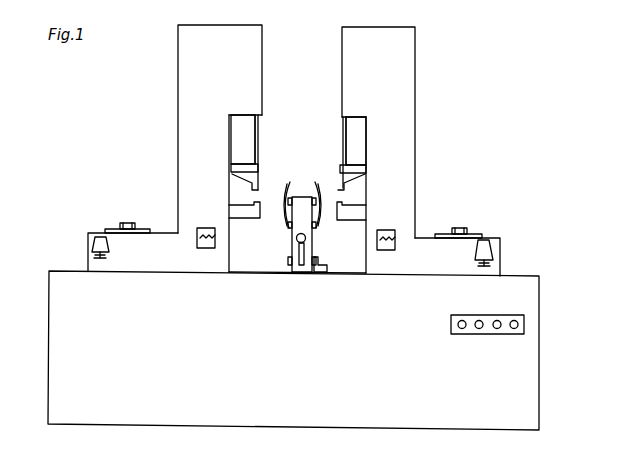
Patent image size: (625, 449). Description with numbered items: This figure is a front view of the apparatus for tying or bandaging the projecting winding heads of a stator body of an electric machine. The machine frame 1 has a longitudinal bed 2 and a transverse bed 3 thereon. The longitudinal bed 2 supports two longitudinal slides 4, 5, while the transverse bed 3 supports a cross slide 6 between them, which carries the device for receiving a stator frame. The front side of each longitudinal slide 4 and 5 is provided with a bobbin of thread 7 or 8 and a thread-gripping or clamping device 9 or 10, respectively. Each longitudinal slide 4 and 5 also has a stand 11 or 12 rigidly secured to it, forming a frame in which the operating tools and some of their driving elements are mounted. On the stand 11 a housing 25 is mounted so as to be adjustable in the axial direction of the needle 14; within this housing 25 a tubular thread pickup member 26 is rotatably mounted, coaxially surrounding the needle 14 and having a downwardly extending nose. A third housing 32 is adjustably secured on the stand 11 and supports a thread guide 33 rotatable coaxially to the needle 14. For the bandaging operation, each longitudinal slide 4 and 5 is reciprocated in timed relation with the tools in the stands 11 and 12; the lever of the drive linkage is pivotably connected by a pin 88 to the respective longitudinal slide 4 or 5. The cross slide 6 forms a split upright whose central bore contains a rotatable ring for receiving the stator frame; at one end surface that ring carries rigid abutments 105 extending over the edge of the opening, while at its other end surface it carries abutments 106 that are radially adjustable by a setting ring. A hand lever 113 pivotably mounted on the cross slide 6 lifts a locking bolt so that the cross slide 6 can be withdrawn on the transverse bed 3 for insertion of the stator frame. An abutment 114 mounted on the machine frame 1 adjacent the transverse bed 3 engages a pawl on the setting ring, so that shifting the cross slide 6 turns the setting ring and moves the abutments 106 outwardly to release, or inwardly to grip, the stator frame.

The machine frame 1 is at (61, 372).
The longitudinal bed 2 is at (60, 265).
The transverse bed 3 is at (294, 274).
The longitudinal slide 4 is at (167, 238).
The longitudinal slide 5 is at (415, 245).
The cross slide 6 is at (292, 238).
The bobbin of thread 7 is at (92, 241).
The bobbin of thread 8 is at (488, 252).
The thread-gripping or clamping device 9 is at (203, 250).
The thread-gripping or clamping device 10 is at (386, 252).
The stand 11 is at (195, 117).
The stand 12 is at (400, 122).
The needle 14 is at (259, 126).
The housing 25 is at (245, 162).
The tubular thread pickup member 26 is at (259, 177).
The third housing 32 is at (237, 218).
The thread guide 33 is at (298, 191).
The pin 88 is at (122, 222).
The abutments 105 is at (287, 192).
The abutments 106 is at (318, 192).
The hand lever 113 is at (298, 240).
The abutment 114 is at (318, 274).